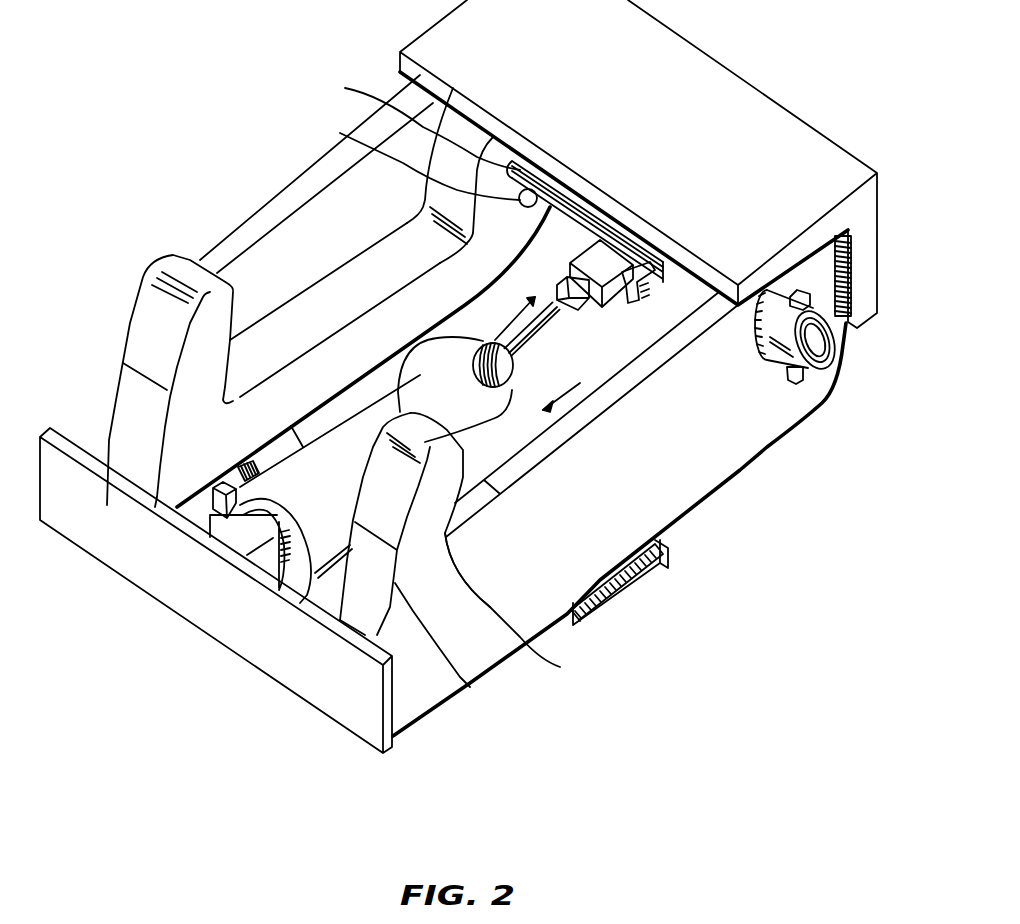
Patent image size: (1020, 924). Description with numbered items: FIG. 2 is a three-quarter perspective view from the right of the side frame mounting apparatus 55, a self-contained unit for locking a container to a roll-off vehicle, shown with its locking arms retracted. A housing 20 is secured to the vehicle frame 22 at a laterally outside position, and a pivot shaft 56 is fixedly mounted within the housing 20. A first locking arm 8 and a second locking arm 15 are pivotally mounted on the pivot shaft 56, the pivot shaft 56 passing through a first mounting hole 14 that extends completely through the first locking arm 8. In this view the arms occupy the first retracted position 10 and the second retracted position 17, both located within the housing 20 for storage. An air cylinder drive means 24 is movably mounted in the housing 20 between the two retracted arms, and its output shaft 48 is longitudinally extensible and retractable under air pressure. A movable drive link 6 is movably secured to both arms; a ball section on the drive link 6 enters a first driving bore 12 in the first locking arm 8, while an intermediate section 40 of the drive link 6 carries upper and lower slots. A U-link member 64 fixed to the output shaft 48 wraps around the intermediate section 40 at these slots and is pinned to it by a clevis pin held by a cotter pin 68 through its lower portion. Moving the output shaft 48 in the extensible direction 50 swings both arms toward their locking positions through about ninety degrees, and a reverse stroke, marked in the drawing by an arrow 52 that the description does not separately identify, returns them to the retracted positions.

The movable drive link 6 is at (572, 237).
The first locking arm 8 is at (173, 263).
The first retracted position 10 is at (123, 420).
The first driving bore 12 is at (340, 133).
The first mounting hole 14 is at (419, 168).
The second locking arm 15 is at (518, 607).
The second retracted position 17 is at (470, 687).
The housing 20 is at (790, 425).
The vehicle frame 22 is at (858, 165).
The air cylinder drive means 24 is at (327, 494).
The intermediate section 40 is at (658, 300).
The output shaft 48 is at (547, 333).
The extensible direction 50 is at (502, 316).
The second direction arrow 52 is at (577, 383).
The side frame mounting apparatus 55 is at (722, 488).
The pivot shaft 56 is at (565, 197).
The U-link member 64 is at (647, 275).
The cotter pin 68 is at (660, 335).